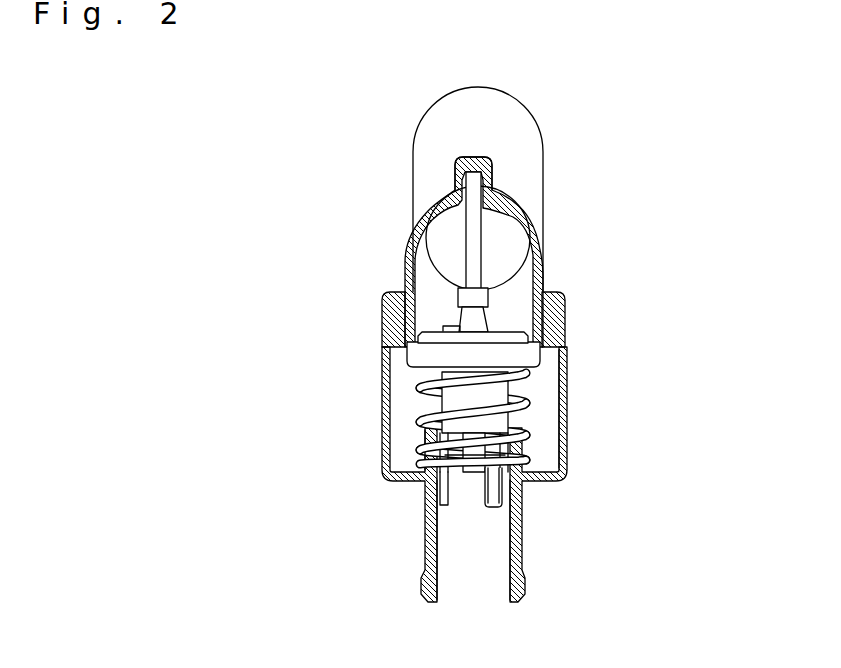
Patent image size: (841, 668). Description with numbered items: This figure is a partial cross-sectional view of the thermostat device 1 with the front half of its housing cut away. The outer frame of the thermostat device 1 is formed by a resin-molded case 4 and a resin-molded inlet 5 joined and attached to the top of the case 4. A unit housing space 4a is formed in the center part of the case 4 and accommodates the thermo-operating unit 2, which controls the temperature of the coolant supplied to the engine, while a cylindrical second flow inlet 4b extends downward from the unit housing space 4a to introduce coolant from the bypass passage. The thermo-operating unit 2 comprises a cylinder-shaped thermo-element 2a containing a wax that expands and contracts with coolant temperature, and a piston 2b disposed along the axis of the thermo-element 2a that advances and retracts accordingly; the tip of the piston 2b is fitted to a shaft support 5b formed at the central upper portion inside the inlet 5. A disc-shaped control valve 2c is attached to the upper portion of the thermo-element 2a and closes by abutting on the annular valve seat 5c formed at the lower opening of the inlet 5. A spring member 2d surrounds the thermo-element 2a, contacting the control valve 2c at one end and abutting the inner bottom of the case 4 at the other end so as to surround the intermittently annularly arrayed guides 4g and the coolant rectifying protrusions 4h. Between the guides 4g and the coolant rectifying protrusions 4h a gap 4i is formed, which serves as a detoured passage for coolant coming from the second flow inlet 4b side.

The thermostat device 1 is at (578, 160).
The thermo-operating unit 2 is at (537, 405).
The thermo-element 2a is at (530, 390).
The piston 2b is at (473, 240).
The control valve 2c is at (507, 332).
The spring member 2d is at (445, 410).
The case 4 is at (565, 481).
The unit housing space 4a is at (543, 438).
The second flow inlet 4b is at (468, 587).
The guides 4g is at (497, 493).
The coolant rectifying protrusions 4h is at (456, 503).
The gap 4i is at (478, 476).
The inlet 5 is at (405, 275).
The shaft support 5b is at (410, 210).
The annular valve seat 5c is at (404, 360).